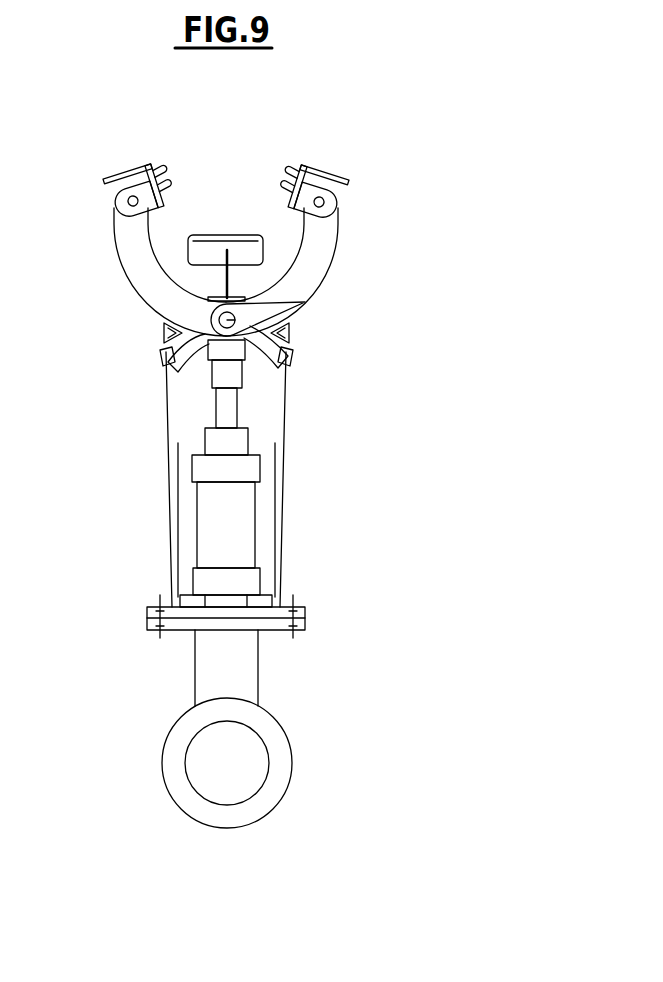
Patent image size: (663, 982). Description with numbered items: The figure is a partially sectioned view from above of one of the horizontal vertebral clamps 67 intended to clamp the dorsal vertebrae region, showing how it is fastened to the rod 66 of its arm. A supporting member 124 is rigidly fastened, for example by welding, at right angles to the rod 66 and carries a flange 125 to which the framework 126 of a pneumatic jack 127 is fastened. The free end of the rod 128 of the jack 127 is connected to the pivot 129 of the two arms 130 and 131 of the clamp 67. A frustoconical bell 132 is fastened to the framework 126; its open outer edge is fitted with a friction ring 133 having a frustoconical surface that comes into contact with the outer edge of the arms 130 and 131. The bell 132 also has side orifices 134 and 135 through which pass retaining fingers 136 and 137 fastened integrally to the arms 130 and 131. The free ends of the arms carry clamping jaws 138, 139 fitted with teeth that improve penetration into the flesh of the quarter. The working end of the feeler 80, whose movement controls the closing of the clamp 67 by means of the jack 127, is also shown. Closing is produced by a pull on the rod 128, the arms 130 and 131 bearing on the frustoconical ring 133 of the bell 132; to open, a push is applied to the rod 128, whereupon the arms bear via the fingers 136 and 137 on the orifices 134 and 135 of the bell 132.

The rod 66 is at (278, 766).
The vertebral clamp 67 is at (356, 228).
The feeler 80 is at (238, 242).
The supporting member 124 is at (240, 678).
The flange 125 is at (305, 623).
The framework 126 is at (278, 493).
The pneumatic jack 127 is at (238, 541).
The rod 128 is at (230, 420).
The pivot 129 is at (306, 302).
The arm 130 is at (130, 250).
The arm 131 is at (318, 258).
The frustoconical bell 132 is at (283, 424).
The friction ring 133 is at (163, 324).
The side orifice 134 is at (291, 344).
The side orifice 135 is at (163, 342).
The retaining finger 136 is at (165, 368).
The retaining finger 137 is at (292, 372).
The clamping jaw 138 is at (152, 170).
The clamping jaw 139 is at (305, 170).